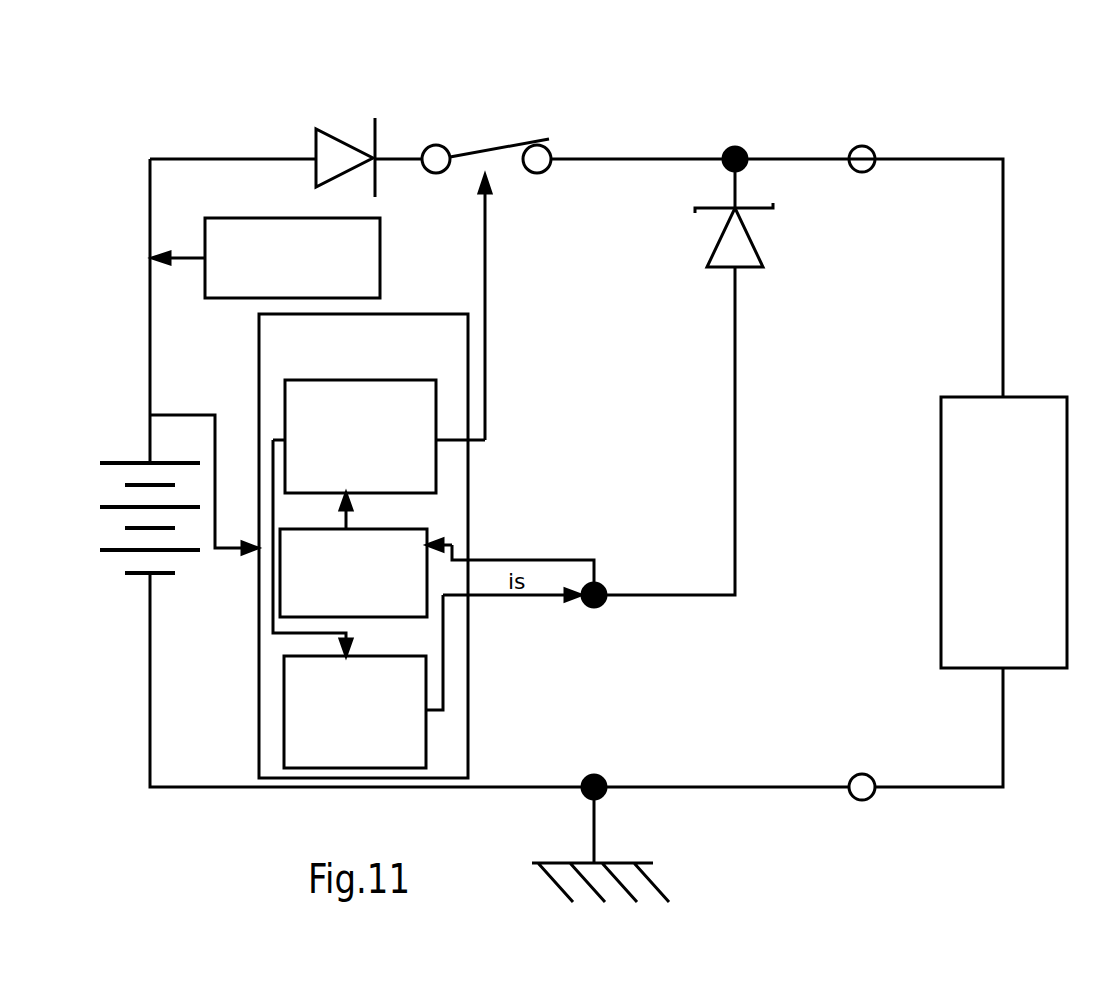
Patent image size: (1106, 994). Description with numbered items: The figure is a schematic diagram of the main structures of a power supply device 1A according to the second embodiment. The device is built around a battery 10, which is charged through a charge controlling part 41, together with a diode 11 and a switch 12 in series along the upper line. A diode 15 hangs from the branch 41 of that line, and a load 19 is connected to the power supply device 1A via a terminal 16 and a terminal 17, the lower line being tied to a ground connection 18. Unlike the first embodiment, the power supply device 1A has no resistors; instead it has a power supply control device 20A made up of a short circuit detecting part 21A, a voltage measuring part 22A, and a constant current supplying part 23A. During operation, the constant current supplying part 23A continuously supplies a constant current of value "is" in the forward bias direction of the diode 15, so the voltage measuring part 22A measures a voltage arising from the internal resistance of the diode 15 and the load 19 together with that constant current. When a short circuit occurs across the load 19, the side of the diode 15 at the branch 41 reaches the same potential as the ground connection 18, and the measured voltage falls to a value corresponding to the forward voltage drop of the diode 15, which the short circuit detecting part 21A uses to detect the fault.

The power supply device 1A is at (663, 112).
The battery 10 is at (137, 576).
The diode 11 is at (342, 138).
The switch 12 is at (497, 148).
The diode 15 is at (773, 204).
The terminal 16 is at (863, 146).
The terminal 17 is at (863, 774).
The ground connection 18 is at (653, 862).
The load 19 is at (1013, 397).
The power supply control device 20A is at (400, 314).
The short circuit detecting part 21A is at (285, 388).
The voltage measuring part 22A is at (400, 529).
The constant current supplying part 23A is at (284, 685).
The charge controlling part 41 is at (214, 218).